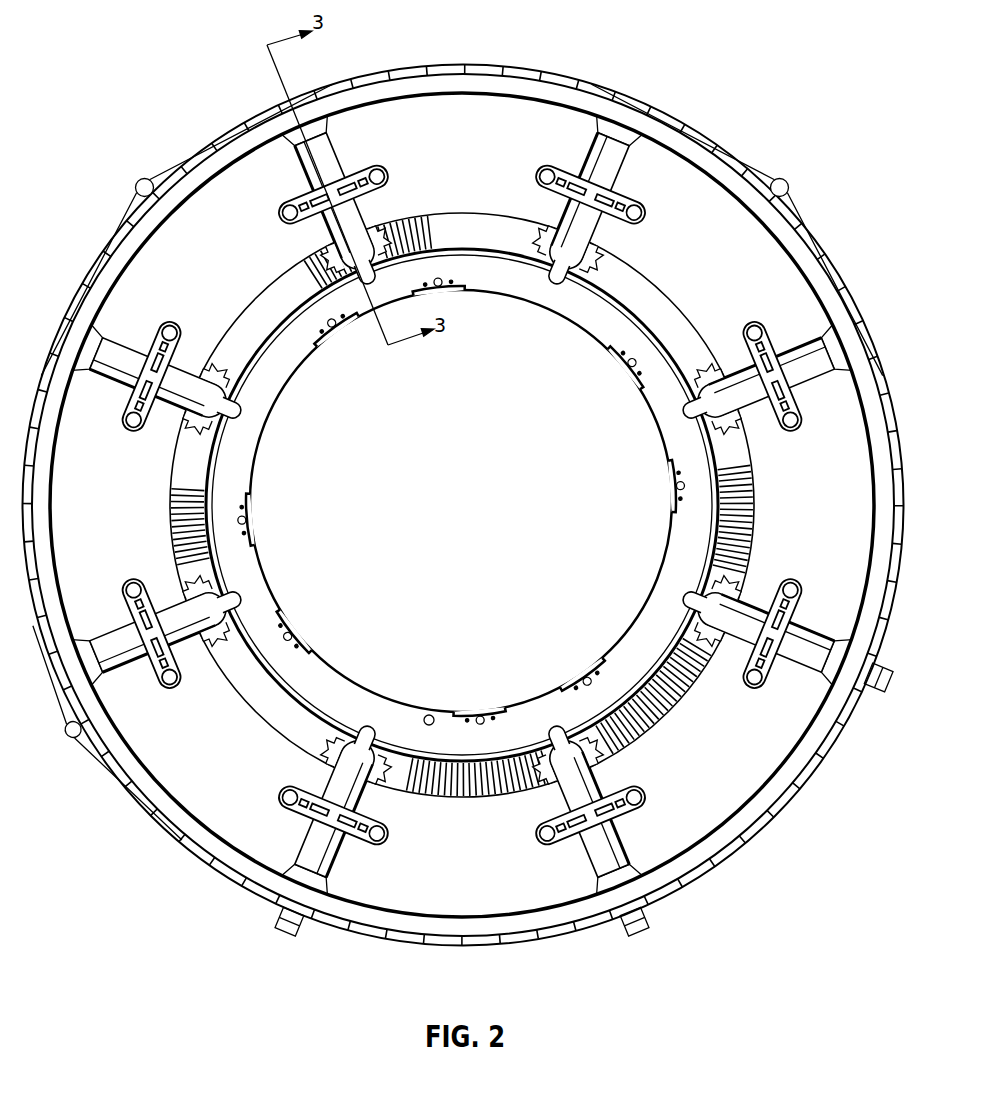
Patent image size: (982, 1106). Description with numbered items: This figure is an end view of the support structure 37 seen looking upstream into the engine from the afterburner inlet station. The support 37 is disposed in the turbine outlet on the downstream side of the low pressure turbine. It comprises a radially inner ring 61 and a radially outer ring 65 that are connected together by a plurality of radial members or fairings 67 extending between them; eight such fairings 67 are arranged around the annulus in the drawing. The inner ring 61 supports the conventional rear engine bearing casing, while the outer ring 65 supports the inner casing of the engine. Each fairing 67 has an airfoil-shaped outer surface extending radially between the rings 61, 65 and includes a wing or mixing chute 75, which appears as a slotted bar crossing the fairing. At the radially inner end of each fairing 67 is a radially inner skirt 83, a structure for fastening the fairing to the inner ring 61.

The support structure 37 is at (462, 516).
The radially inner ring 61 is at (461, 500).
The radially outer ring 65 is at (466, 490).
The fairing 67 is at (462, 505).
The mixing chute 75 is at (469, 521).
The radially inner skirt 83 is at (462, 488).